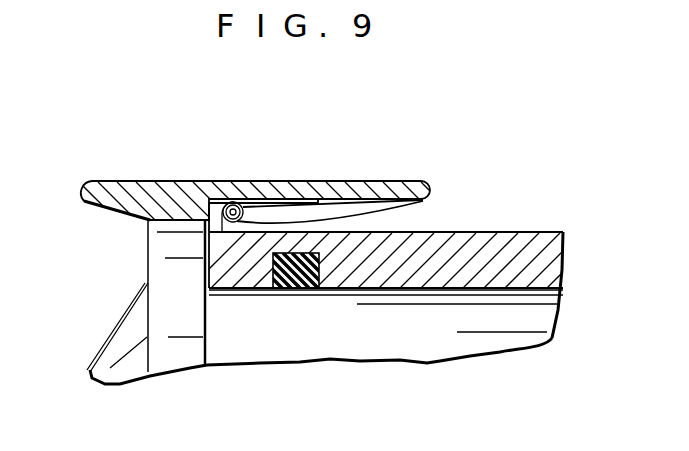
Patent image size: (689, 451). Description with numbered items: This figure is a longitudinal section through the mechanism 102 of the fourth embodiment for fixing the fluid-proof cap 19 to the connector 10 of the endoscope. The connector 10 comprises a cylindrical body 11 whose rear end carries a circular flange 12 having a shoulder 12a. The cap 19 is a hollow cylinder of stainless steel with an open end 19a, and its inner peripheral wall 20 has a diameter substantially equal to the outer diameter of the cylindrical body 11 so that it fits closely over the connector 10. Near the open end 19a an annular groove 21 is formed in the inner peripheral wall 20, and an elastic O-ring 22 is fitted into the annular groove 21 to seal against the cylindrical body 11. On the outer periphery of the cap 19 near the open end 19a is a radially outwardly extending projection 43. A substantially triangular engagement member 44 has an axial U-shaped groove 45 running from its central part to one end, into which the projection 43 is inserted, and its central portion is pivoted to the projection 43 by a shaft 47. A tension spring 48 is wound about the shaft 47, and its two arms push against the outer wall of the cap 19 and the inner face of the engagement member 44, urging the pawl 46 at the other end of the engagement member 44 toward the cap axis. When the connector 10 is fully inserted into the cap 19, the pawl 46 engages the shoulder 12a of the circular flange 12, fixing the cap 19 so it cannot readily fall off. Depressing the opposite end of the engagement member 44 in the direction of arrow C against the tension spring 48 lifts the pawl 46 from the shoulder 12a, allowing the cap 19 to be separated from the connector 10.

The mechanism for fixing fluid-proof cap 102 is at (251, 158).
The engagement member 44 is at (127, 195).
The pawl 46 is at (125, 220).
The shaft 47 is at (236, 210).
The tension spring 48 is at (294, 200).
The U-shaped groove 45 is at (343, 206).
The arrow indicating depressing direction C is at (316, 173).
The fluid-proof cap 19 is at (510, 244).
The open end of cap 19a is at (208, 268).
The inner peripheral wall of cap 20 is at (533, 295).
The annular groove 21 is at (312, 288).
The O-ring 22 is at (295, 286).
The projection 43 is at (230, 224).
The shoulder of circular flange 12a is at (165, 241).
The circular flange 12 is at (155, 304).
The cylindrical body 11 is at (430, 346).
The connector 10 is at (196, 372).